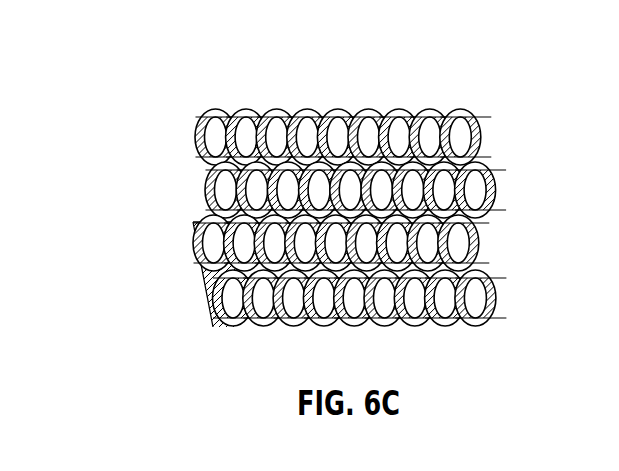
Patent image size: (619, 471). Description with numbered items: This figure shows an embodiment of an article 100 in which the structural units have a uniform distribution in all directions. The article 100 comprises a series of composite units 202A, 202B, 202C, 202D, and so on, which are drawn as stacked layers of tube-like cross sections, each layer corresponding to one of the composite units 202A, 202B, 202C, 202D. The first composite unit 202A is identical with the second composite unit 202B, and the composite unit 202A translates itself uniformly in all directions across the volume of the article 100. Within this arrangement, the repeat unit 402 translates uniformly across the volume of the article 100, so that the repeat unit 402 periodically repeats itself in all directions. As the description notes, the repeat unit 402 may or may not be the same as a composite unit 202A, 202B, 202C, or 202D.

The article 100 is at (362, 182).
The first composite unit 202A is at (527, 110).
The second composite unit 202B is at (527, 170).
The composite unit 202C is at (527, 225).
The composite unit 202D is at (527, 280).
The repeat unit 402 is at (207, 281).